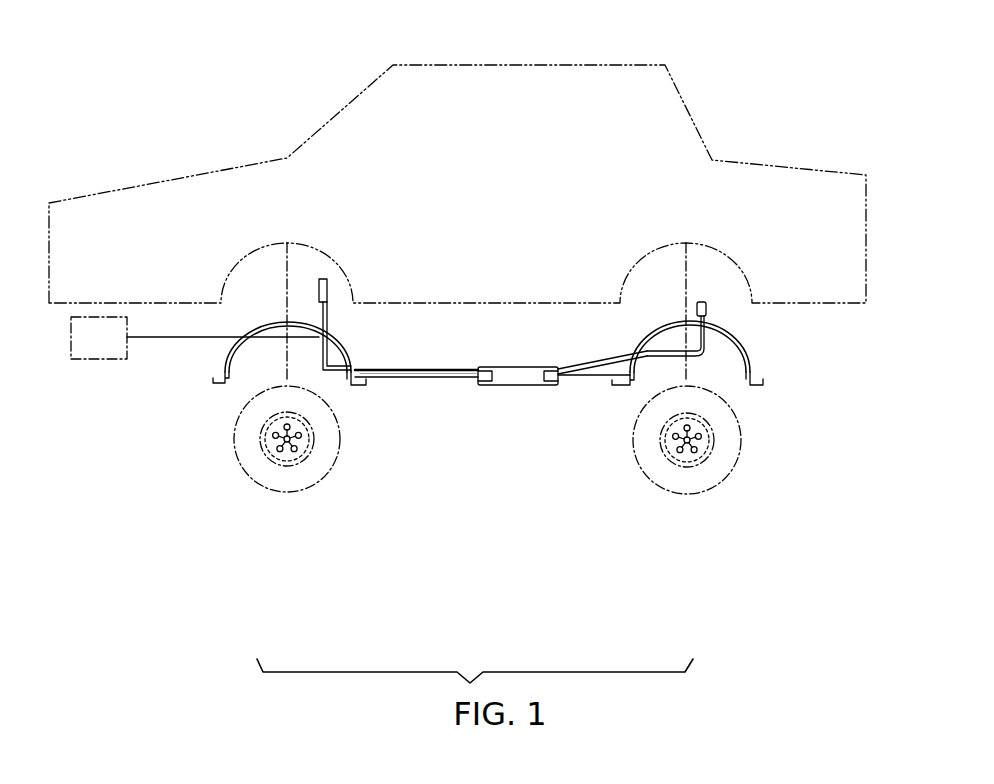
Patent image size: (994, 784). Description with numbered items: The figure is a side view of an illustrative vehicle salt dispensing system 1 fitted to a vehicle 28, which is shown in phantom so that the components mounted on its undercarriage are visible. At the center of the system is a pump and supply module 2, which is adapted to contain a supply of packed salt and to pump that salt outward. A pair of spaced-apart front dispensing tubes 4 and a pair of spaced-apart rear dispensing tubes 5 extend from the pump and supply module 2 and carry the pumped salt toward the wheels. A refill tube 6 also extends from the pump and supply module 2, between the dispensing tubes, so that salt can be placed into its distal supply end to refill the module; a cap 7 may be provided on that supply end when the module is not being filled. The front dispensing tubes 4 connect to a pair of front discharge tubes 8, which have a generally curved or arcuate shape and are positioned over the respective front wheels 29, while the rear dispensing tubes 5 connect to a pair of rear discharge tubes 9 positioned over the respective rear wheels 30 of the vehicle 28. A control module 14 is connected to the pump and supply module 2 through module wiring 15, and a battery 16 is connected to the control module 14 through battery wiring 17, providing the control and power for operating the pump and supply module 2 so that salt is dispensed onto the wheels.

The vehicle salt dispensing system 1 is at (465, 393).
The pump and supply module 2 is at (515, 386).
The front dispensing tubes 4 is at (397, 378).
The rear dispensing tubes 5 is at (583, 370).
The refill tube 6 is at (640, 358).
The cap 7 is at (706, 306).
The front discharge tubes 8 is at (222, 365).
The rear discharge tubes 9 is at (760, 372).
The control module 14 is at (328, 293).
The module wiring 15 is at (327, 376).
The battery 16 is at (93, 352).
The battery wiring 17 is at (177, 338).
The vehicle 28 is at (872, 162).
The front wheels 29 is at (305, 478).
The rear wheels 30 is at (725, 448).